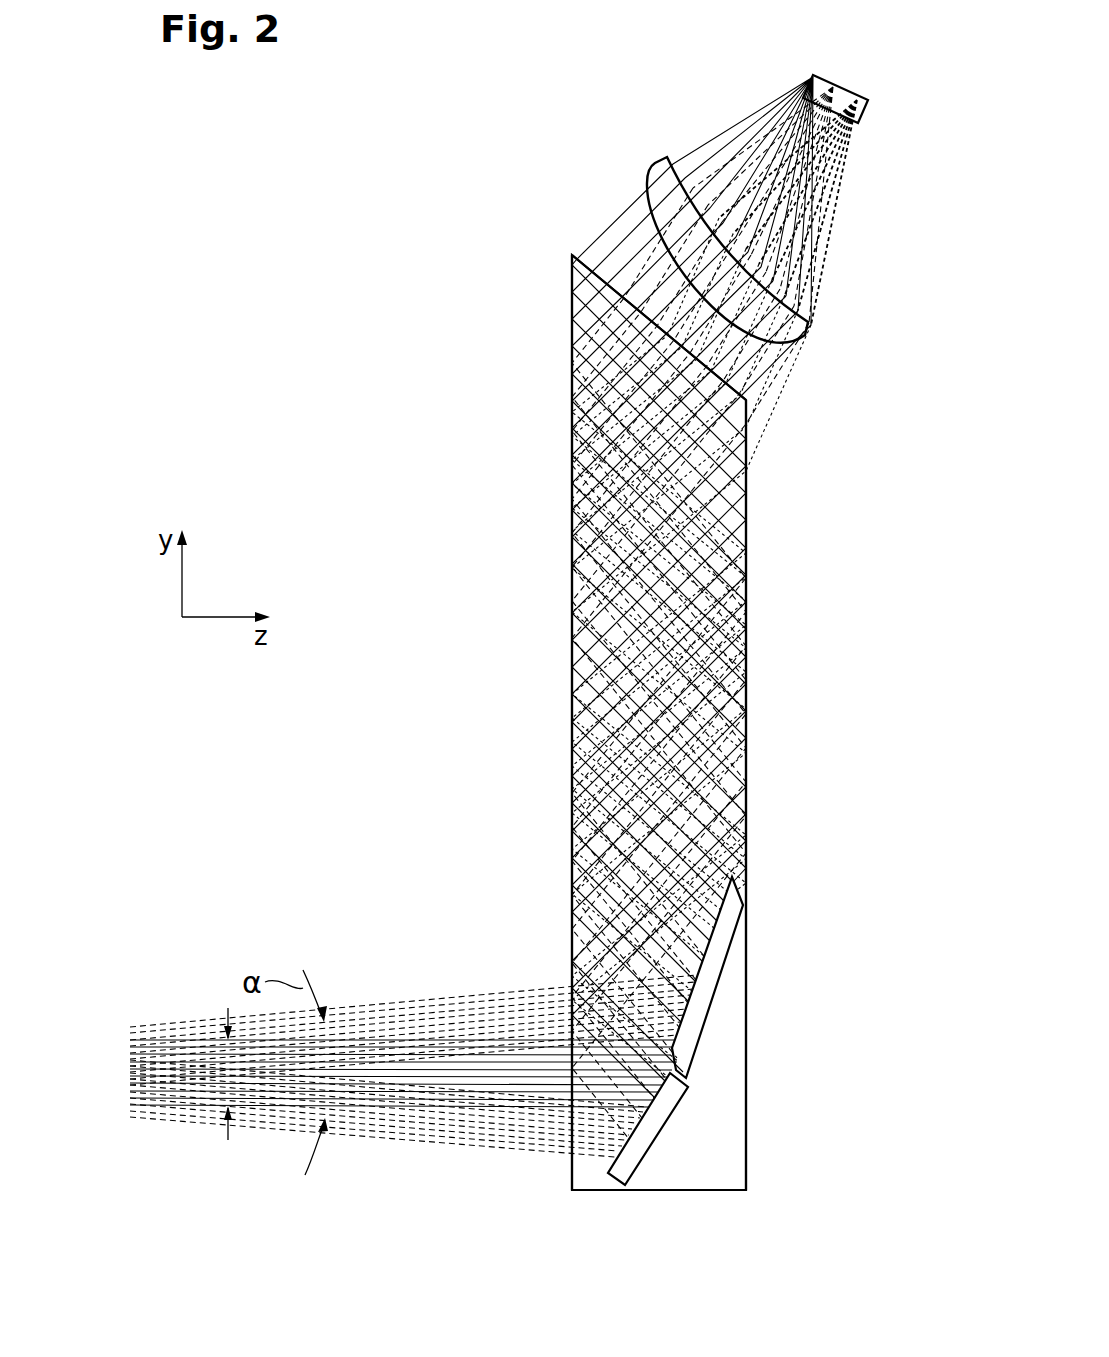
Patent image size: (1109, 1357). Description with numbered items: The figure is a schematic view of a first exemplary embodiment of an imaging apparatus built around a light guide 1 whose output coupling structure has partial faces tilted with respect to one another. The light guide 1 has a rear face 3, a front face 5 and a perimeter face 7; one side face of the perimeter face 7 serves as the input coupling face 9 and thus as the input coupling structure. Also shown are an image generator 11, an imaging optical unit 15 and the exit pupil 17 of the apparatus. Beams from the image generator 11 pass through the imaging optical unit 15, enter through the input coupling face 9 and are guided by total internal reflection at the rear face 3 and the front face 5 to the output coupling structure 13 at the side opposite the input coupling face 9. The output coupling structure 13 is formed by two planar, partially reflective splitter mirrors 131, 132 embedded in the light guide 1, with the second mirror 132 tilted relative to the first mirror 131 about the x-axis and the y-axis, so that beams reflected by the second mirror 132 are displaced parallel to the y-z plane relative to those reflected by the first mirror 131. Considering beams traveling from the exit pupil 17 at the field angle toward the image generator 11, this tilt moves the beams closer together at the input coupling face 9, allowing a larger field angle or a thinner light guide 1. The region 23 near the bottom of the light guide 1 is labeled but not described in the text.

The light guide 1 is at (572, 679).
The rear face 3 is at (572, 803).
The front face 5 is at (746, 800).
The perimeter face 7 is at (595, 1191).
The input coupling face 9 is at (572, 253).
The image generator 11 is at (852, 92).
The output coupling structure 13 is at (715, 1031).
The first output coupling mirror 131 is at (703, 1025).
The second output coupling mirror 132 is at (648, 1147).
The imaging optical unit 15 is at (808, 327).
The exit pupil 17 is at (228, 1010).
The bottom portion 23 is at (688, 1175).